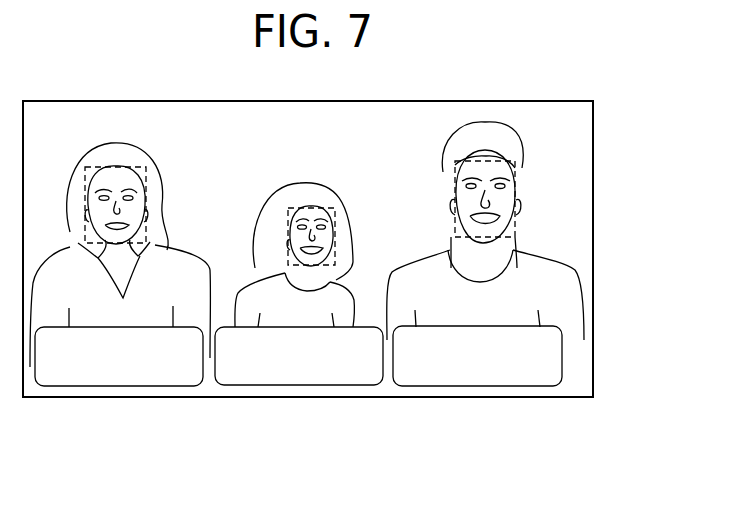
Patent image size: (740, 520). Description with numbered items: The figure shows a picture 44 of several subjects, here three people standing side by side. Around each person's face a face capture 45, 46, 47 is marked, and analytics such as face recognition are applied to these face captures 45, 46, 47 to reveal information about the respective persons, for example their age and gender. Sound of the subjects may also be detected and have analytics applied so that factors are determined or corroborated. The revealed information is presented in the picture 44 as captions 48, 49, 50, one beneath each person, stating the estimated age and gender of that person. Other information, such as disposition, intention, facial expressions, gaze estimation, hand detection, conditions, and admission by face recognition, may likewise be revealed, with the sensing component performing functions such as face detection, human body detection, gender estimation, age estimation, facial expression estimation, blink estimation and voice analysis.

The picture 44 is at (594, 180).
The face capture 45 is at (70, 229).
The face capture 46 is at (285, 228).
The face capture 47 is at (455, 225).
The caption 48 is at (113, 386).
The caption 49 is at (293, 385).
The caption 50 is at (473, 386).